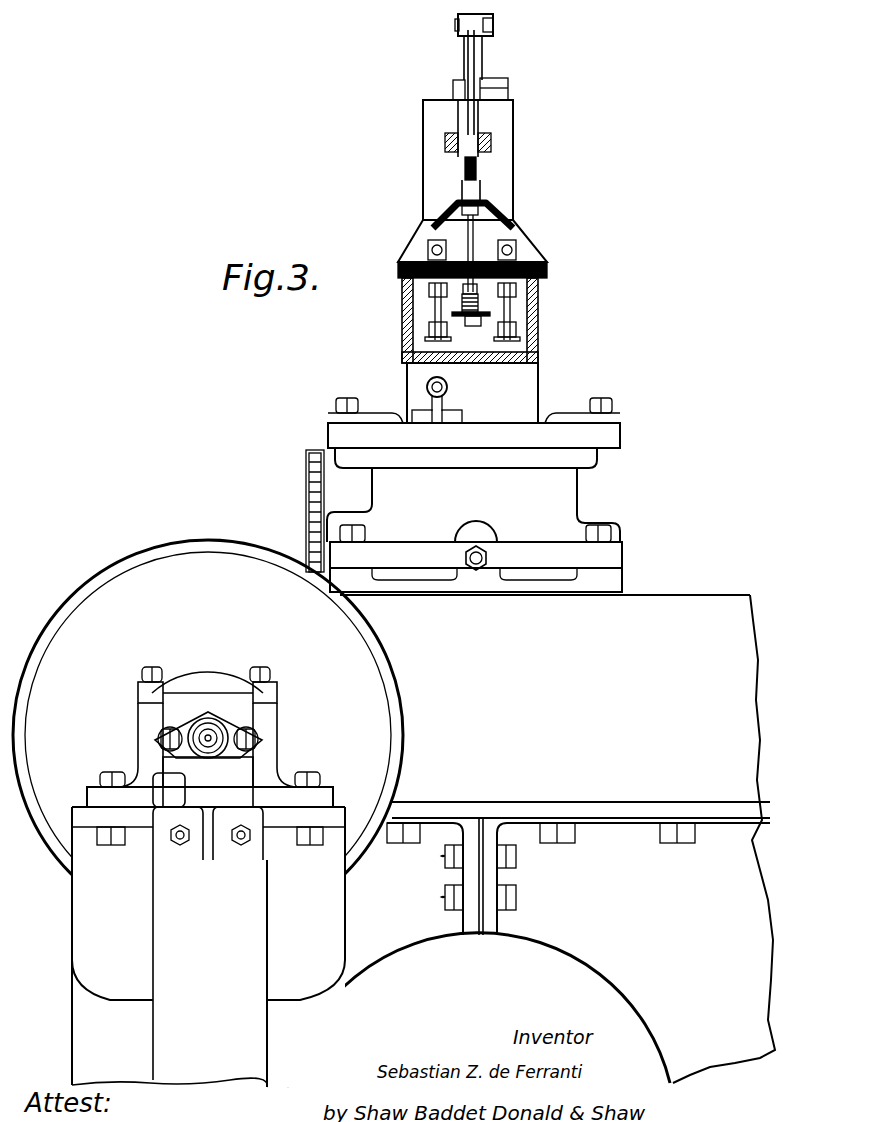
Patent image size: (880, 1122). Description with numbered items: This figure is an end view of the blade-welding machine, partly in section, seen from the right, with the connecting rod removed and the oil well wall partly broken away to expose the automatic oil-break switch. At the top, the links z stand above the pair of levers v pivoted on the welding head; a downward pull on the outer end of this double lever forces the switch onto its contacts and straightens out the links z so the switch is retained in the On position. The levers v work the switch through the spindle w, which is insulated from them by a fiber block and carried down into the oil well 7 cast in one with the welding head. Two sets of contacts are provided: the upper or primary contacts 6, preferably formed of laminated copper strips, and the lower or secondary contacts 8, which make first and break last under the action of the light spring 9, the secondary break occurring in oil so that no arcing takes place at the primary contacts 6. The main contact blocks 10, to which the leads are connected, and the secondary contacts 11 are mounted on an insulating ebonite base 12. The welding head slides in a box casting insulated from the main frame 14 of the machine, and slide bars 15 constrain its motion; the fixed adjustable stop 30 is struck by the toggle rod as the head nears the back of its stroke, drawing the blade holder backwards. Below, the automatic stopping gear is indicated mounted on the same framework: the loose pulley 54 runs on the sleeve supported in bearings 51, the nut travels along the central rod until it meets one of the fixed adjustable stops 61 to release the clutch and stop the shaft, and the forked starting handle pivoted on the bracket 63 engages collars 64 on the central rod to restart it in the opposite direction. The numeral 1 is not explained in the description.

The links z is at (465, 59).
The levers v is at (452, 133).
The rod 1 is at (483, 128).
The spindle w is at (477, 170).
The primary contacts 6 is at (449, 206).
The main contact blocks 10 is at (503, 248).
The insulating ebonite base 12 is at (543, 268).
The oil well 7 is at (403, 303).
The main frame 14 is at (470, 287).
The light spring 9 is at (477, 308).
The secondary contacts 8 is at (490, 320).
The secondary contacts 11 is at (472, 321).
The fixed adjustable stop 30 is at (449, 388).
The slide bars 15 is at (380, 423).
The loose pulley 54 is at (230, 544).
The bearings 51 is at (213, 680).
The fixed adjustable stops 61 is at (218, 723).
The bracket 63 is at (178, 816).
The collars 64 is at (214, 760).